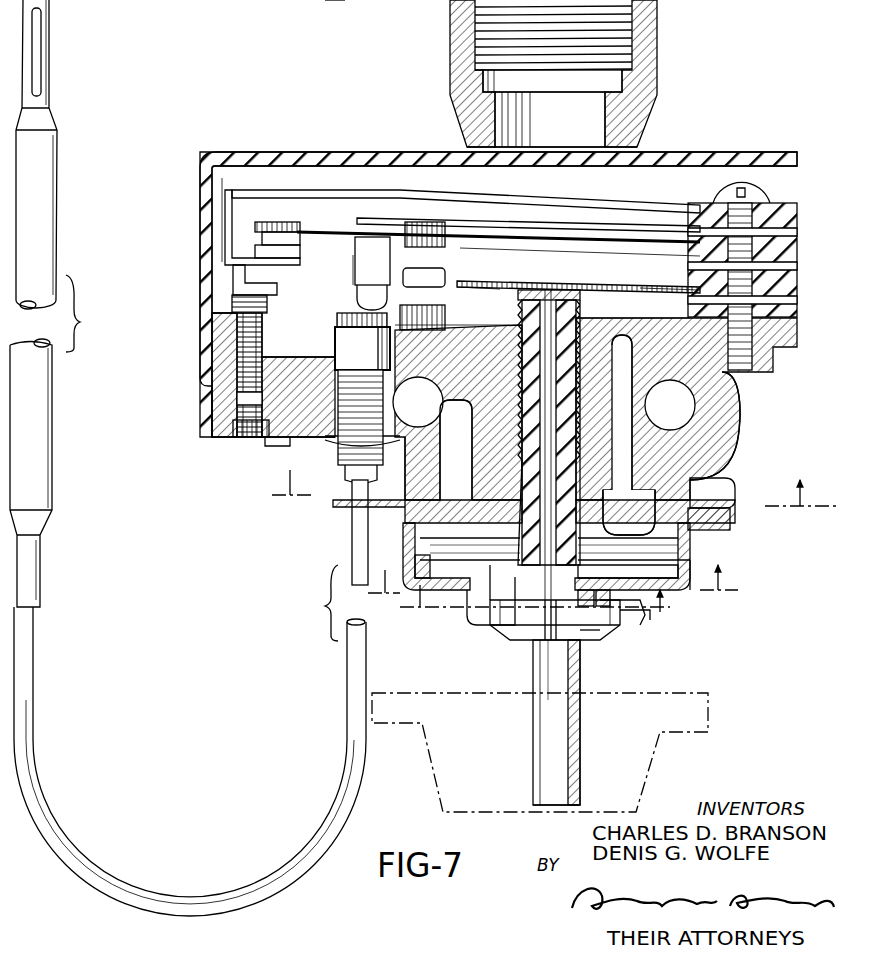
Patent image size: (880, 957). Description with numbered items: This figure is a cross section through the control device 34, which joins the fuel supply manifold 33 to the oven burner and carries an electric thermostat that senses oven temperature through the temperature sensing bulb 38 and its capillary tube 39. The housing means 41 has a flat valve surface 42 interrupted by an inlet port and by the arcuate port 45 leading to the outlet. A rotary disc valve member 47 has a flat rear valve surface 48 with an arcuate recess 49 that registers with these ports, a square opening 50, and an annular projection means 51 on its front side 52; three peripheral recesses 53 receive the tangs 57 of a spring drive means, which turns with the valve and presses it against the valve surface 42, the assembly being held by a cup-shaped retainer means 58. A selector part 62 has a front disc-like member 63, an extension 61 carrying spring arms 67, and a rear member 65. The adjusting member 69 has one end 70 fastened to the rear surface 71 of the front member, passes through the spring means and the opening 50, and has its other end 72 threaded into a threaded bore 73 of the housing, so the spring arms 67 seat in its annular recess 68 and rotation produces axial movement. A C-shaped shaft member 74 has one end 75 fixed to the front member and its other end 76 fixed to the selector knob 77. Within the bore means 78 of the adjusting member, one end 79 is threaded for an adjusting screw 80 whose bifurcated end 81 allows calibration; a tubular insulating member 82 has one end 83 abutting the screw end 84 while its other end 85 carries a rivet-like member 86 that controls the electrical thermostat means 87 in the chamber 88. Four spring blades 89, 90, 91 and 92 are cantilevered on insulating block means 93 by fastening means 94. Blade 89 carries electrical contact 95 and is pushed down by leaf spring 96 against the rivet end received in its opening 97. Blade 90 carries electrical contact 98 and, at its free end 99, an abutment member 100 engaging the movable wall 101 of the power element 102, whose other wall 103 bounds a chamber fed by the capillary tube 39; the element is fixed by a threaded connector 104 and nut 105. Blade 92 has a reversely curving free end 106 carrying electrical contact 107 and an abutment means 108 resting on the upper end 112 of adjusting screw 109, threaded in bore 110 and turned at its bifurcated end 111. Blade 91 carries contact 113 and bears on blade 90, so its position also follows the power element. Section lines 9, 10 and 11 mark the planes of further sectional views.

The section line 9- 9 is at (535, 622).
The section line 10- 10 is at (553, 592).
The section line 11- 11 is at (555, 506).
The fuel supply manifold 33 is at (333, 11).
The control device 34 is at (735, 70).
The temperature sensing bulb 38 is at (42, 214).
The capillary tube 39 is at (292, 858).
The housing means 41 is at (225, 413).
The flat valve surface 42 is at (690, 483).
The arcuate port 45 is at (692, 467).
The rotary disc valve member 47 is at (660, 556).
The flat rear valve surface 48 is at (470, 500).
The arcuate recess 49 is at (645, 512).
The opening 50 is at (492, 470).
The annular projection means 51 is at (660, 590).
The front side 52 is at (410, 530).
The peripheral recesses 53 is at (705, 548).
The tangs 57 is at (700, 570).
The cup-shaped retainer means 58 is at (400, 540).
The extension 61 is at (480, 600).
The selector part 62 is at (515, 655).
The front disc-like member 63 is at (612, 640).
The rear member 65 is at (485, 530).
The spring arms 67 is at (500, 650).
The annular recess 68 is at (575, 630).
The adjusting member 69 is at (502, 605).
The one end 70 is at (540, 650).
The rear surface 71 is at (580, 640).
The other end 72 is at (510, 310).
The threaded bore 73 is at (580, 443).
The shaft member 74 is at (580, 760).
The one end 75 is at (548, 640).
The other end 76 is at (565, 795).
The selector knob 77 is at (657, 757).
The bore means 78 is at (625, 520).
The one end 79 is at (552, 650).
The adjusting screw 80 is at (599, 606).
The bifurcated end 81 is at (575, 645).
The tubular insulating member 82 is at (558, 412).
The one end 83 is at (628, 606).
The end 84 is at (492, 560).
The other end 85 is at (600, 290).
The rivet-like member 86 is at (562, 300).
The electrical thermostat means 87 is at (426, 182).
The chamber 88 is at (660, 190).
The spring blade 89 is at (470, 287).
The spring blade 90 is at (497, 235).
The spring blade 91 is at (460, 310).
The spring blade 92 is at (550, 205).
The insulating block means 93 is at (797, 308).
The fastening means 94 is at (787, 200).
The electrical contact 95 is at (416, 277).
The leaf spring 96 is at (640, 290).
The opening 97 is at (545, 290).
The electrical contact 98 is at (425, 235).
The free end 99 is at (352, 258).
The abutment member 100 is at (355, 283).
The movable wall 101 is at (337, 302).
The power element 102 is at (400, 345).
The another wall 103 is at (397, 320).
The threaded connector 104 is at (268, 442).
The nut 105 is at (330, 440).
The reversely curving free end 106 is at (253, 253).
The electrical contact 107 is at (258, 240).
The abutment means 108 is at (230, 287).
The adjusting screw 109 is at (245, 340).
The internally threaded bore 110 is at (250, 437).
The bifurcated end 111 is at (243, 398).
The upper end 112 is at (232, 307).
The contact 113 is at (261, 222).